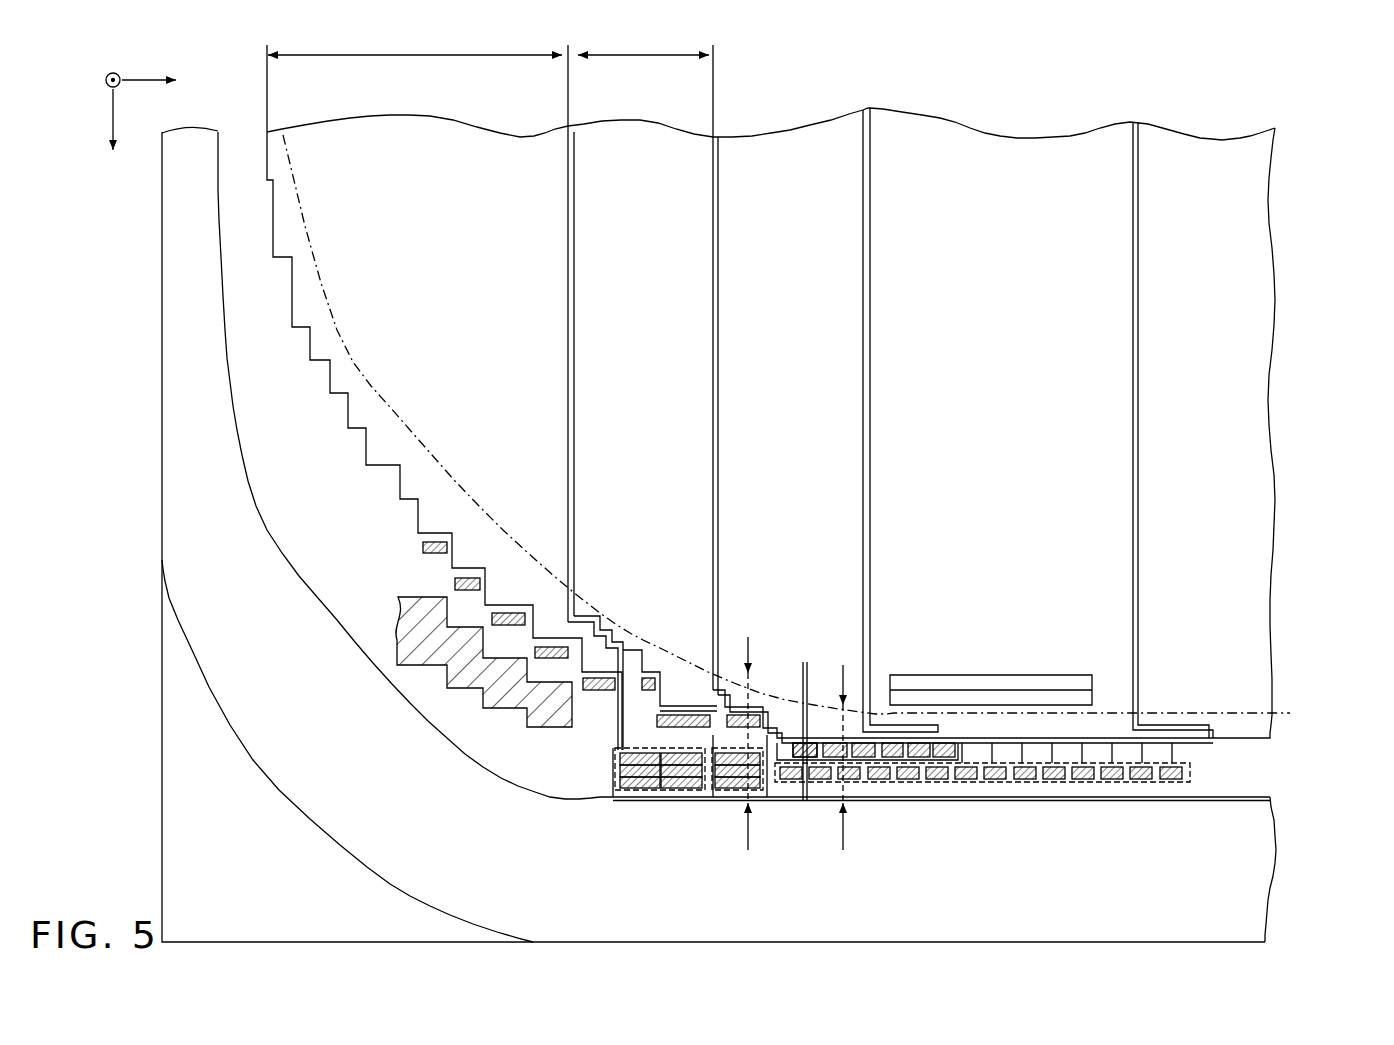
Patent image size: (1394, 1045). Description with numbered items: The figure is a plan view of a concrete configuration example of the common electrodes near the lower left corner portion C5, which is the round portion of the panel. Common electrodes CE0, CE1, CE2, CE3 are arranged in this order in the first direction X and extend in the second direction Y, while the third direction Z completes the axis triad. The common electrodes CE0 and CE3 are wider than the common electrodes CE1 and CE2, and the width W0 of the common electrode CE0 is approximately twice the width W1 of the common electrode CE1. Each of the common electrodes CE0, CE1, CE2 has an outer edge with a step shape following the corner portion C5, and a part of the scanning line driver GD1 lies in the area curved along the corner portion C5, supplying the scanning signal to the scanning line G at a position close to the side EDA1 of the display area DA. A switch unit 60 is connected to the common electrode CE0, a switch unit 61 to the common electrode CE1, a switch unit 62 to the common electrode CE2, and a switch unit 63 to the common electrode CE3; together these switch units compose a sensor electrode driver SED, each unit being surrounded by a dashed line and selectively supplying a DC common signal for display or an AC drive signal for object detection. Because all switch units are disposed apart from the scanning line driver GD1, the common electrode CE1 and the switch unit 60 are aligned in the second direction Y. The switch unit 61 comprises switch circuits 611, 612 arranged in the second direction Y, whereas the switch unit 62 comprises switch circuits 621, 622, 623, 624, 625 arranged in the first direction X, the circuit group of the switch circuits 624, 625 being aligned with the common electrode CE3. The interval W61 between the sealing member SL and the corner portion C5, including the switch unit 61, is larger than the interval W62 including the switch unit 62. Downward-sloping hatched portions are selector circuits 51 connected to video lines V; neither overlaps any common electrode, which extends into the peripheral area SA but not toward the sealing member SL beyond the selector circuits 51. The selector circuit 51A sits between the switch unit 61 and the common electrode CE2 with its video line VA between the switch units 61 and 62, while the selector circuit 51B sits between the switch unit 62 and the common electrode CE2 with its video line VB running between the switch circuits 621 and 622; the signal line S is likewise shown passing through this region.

The selector circuit 51 is at (682, 712).
The selector circuit 51A is at (742, 712).
The selector circuit 51B is at (800, 740).
The switch unit 60 is at (630, 800).
The switch unit 61 is at (762, 836).
The switch circuit 611 is at (718, 798).
The switch circuit 612 is at (734, 798).
The switch unit 62 is at (918, 760).
The switch circuit 621 is at (800, 760).
The switch circuit 622 is at (833, 760).
The switch circuit 623 is at (860, 760).
The switch circuit 624 is at (892, 760).
The switch circuit 625 is at (915, 760).
The switch unit 63 is at (1060, 783).
The lower left corner portion C5 is at (603, 620).
The common electrode CE0 is at (418, 131).
The common electrode CE1 is at (645, 127).
The common electrode CE2 is at (792, 130).
The common electrode CE3 is at (1008, 128).
The display area DA is at (1292, 702).
The side EDA1 is at (1240, 713).
The scanning line G is at (1040, 675).
The scanning line driver GD1 is at (531, 735).
The signal line S is at (805, 662).
The peripheral area SA is at (1292, 733).
The sensor electrode driver SED is at (1176, 782).
The sealing member SL is at (1268, 862).
The video line V is at (615, 770).
The video line VA is at (768, 710).
The video line VB is at (806, 800).
The width W0 is at (415, 46).
The width W1 is at (643, 46).
The interval W61 is at (748, 637).
The interval W62 is at (843, 665).
The first direction X is at (159, 81).
The second direction Y is at (113, 136).
The third direction Z is at (113, 66).